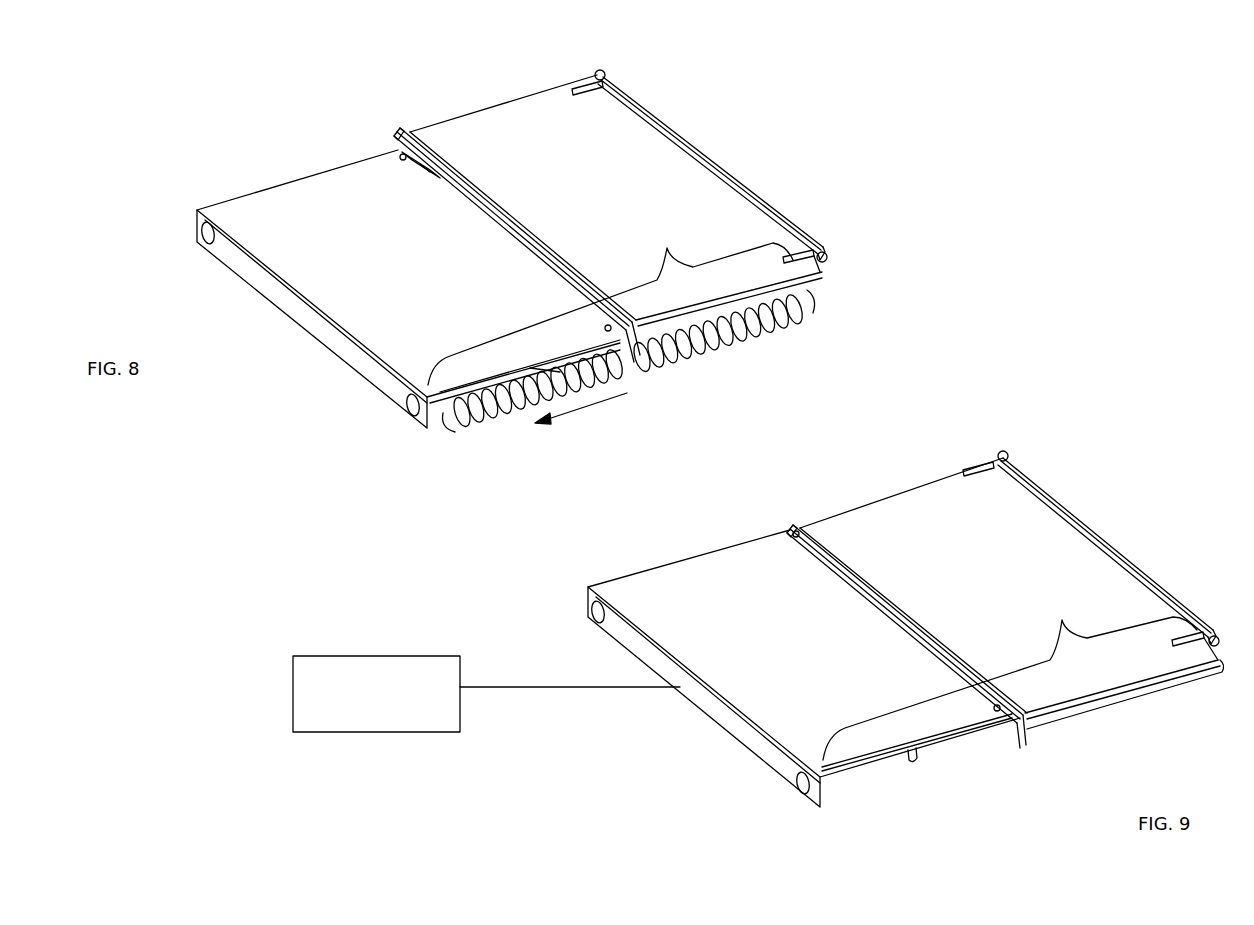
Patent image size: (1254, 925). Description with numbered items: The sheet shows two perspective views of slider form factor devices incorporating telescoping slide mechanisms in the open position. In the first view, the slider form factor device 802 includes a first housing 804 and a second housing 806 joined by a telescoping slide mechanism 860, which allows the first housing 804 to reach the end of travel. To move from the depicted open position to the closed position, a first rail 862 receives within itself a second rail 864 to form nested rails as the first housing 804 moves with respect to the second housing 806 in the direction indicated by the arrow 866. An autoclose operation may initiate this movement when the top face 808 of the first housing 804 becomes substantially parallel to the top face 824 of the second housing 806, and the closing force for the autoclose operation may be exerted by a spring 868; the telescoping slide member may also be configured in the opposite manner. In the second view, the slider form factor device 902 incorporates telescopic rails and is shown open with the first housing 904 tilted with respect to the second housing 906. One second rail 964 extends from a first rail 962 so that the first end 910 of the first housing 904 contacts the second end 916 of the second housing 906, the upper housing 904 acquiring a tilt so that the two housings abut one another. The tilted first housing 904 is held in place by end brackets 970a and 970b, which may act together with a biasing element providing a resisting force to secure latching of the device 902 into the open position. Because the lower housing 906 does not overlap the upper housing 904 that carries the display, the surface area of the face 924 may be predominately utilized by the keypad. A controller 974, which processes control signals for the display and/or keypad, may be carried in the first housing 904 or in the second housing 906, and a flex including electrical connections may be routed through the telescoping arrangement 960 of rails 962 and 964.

In FIG. 8, the slider form factor device 802 is at (355, 64).
In FIG. 8, the first housing 804 is at (720, 160).
In FIG. 8, the second housing 806 is at (297, 178).
In FIG. 8, the top face of the first housing 808 is at (623, 133).
In FIG. 8, the top face of the second housing 824 is at (310, 252).
In FIG. 8, the telescoping slide mechanism 860 is at (610, 306).
In FIG. 8, the first rail 862 is at (698, 318).
In FIG. 8, the second rail 864 is at (547, 373).
In FIG. 8, the arrow 866 is at (598, 413).
In FIG. 8, the spring 868 is at (710, 342).
In FIG. 9, the slider form factor device 902 is at (432, 550).
In FIG. 9, the first housing 904 is at (1090, 555).
In FIG. 9, the second housing 906 is at (655, 583).
In FIG. 9, the first end of the first housing 910 is at (795, 527).
In FIG. 9, the second end of the second housing 916 is at (790, 537).
In FIG. 9, the face of the second housing 924 is at (640, 612).
In FIG. 9, the telescoping arrangement 960 is at (1010, 678).
In FIG. 9, the first rail 962 is at (1135, 688).
In FIG. 9, the second rail 964 is at (917, 753).
In FIG. 9, the end bracket 970a is at (1203, 630).
In FIG. 9, the end bracket 970b is at (1003, 458).
In FIG. 9, the controller 974 is at (313, 656).